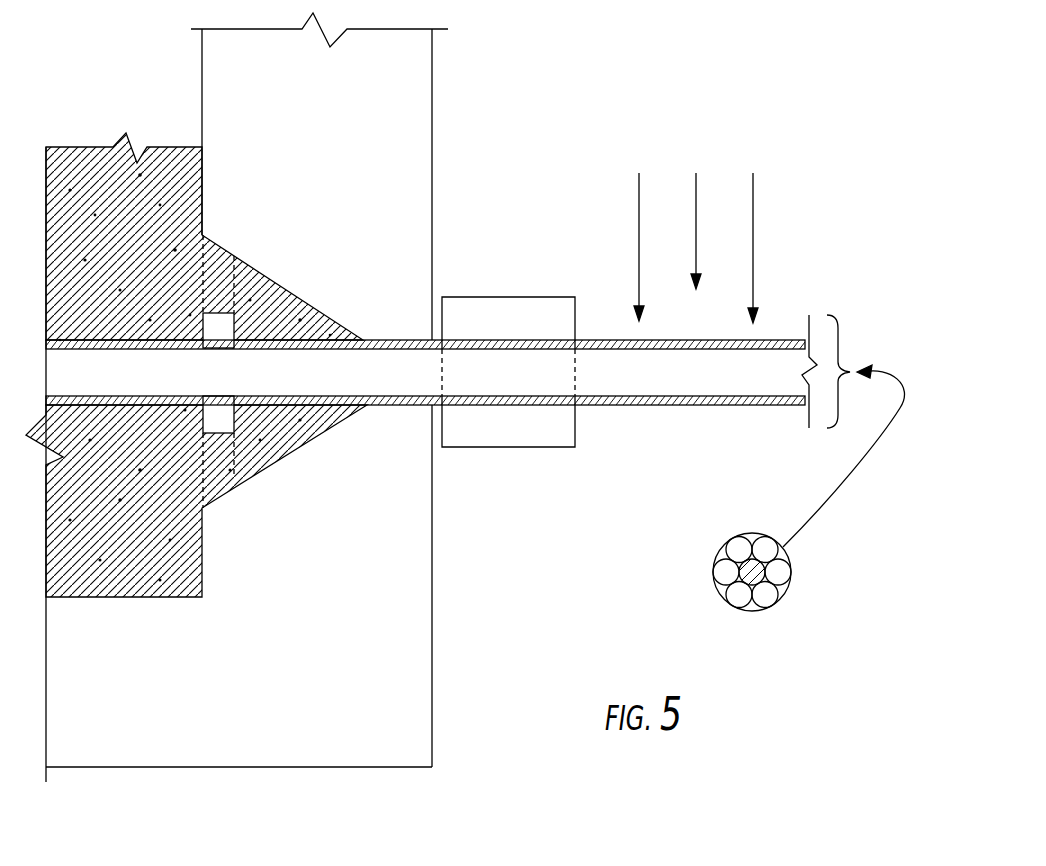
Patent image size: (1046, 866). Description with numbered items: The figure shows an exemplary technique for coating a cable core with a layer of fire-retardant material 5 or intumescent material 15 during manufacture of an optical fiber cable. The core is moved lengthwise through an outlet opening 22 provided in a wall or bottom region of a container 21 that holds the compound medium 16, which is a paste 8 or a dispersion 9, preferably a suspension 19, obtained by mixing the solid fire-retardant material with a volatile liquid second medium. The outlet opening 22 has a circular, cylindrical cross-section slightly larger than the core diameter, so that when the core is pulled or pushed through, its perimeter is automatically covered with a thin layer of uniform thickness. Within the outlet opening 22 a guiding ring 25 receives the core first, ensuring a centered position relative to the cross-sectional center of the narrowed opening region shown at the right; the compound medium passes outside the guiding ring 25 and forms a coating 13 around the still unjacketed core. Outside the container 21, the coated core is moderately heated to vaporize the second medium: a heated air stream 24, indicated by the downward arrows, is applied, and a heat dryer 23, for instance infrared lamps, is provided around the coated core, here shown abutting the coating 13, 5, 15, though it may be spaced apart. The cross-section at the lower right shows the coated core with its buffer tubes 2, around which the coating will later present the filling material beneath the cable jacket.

The buffer tubes 2 is at (727, 572).
The fire-retardant material 5 is at (809, 473).
The paste 8 is at (196, 320).
The dispersion 9 is at (196, 320).
The coating 13 is at (809, 473).
The intumescent material 15 is at (769, 345).
The compound medium 16 is at (196, 320).
The suspension 19 is at (83, 170).
The container 21 is at (460, 53).
The outlet opening 22 is at (667, 370).
The heat dryer 23 is at (499, 311).
The heated air stream 24 is at (696, 232).
The guiding ring 25 is at (222, 323).